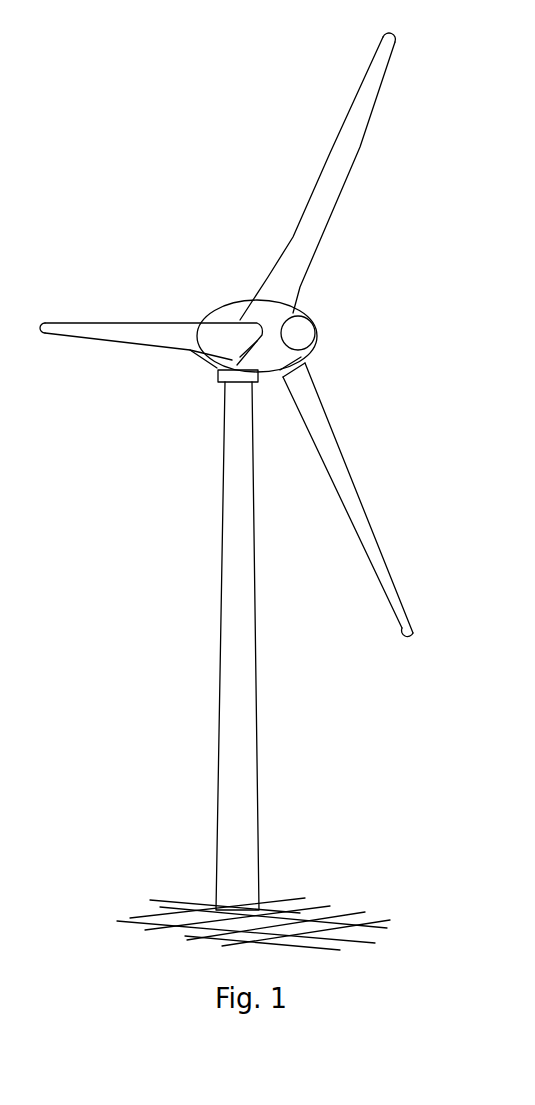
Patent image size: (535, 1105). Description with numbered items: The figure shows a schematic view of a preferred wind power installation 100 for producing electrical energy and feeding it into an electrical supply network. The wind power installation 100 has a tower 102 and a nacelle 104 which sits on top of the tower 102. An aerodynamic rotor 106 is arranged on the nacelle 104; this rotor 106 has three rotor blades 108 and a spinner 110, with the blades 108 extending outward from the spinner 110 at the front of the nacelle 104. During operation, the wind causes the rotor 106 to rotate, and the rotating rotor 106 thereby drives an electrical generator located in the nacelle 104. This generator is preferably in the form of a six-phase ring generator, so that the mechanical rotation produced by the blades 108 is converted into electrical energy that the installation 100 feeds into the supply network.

The wind power installation 100 is at (185, 437).
The tower 102 is at (243, 727).
The nacelle 104 is at (233, 317).
The aerodynamic rotor 106 is at (375, 266).
The rotor blades 108 is at (95, 327).
The spinner 110 is at (303, 333).